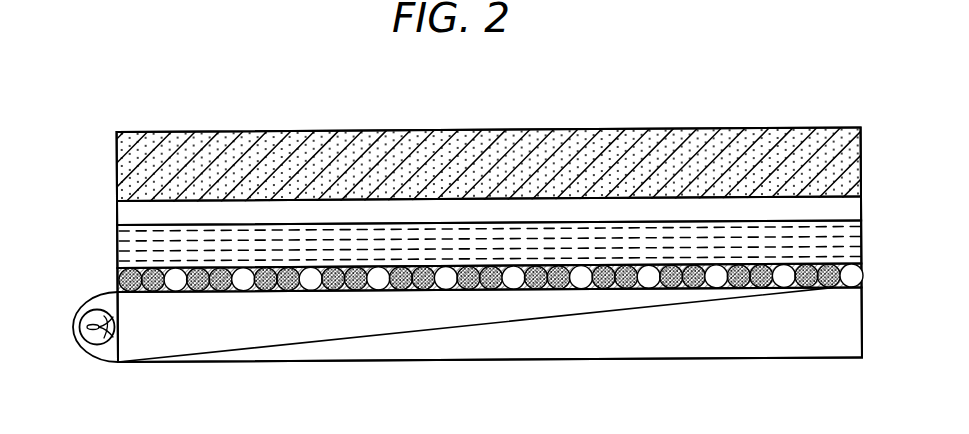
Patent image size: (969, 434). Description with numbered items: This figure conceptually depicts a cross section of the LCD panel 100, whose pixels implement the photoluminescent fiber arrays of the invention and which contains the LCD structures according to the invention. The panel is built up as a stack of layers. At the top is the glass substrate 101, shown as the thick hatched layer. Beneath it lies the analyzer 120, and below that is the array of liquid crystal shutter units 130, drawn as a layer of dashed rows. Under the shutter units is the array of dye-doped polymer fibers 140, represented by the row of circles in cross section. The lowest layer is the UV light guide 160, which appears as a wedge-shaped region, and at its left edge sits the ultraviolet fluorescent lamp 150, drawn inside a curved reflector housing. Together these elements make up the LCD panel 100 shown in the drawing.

The LCD panel 100 is at (640, 50).
The glass substrate 101 is at (794, 139).
The analyzer 120 is at (853, 208).
The array of liquid crystal shutter units 130 is at (118, 249).
The array of dye-doped polymer fibers 140 is at (764, 277).
The ultraviolet fluorescent lamp 150 is at (78, 324).
The UV light guide 160 is at (278, 333).